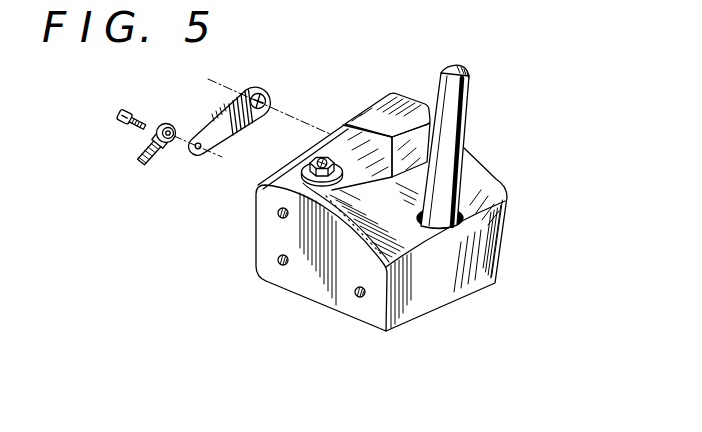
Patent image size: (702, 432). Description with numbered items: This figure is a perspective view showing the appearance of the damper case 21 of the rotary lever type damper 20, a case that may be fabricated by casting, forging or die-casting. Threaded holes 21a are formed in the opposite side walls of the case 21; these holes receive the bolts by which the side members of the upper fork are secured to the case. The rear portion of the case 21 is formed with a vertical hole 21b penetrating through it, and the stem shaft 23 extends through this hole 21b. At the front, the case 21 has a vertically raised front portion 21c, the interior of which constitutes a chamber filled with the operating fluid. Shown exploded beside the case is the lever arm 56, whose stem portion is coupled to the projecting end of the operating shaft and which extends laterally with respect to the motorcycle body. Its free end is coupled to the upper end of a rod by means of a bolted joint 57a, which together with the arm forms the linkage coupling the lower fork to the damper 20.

The rotary lever type damper 20 is at (375, 194).
The damper case 21 is at (423, 302).
The threaded holes 21a is at (277, 214).
The vertical hole 21b is at (464, 221).
The vertically raised front portion 21c is at (272, 178).
The stem shaft 23 is at (470, 93).
The lever arm 56 is at (212, 96).
The bolted joint 57a is at (158, 119).